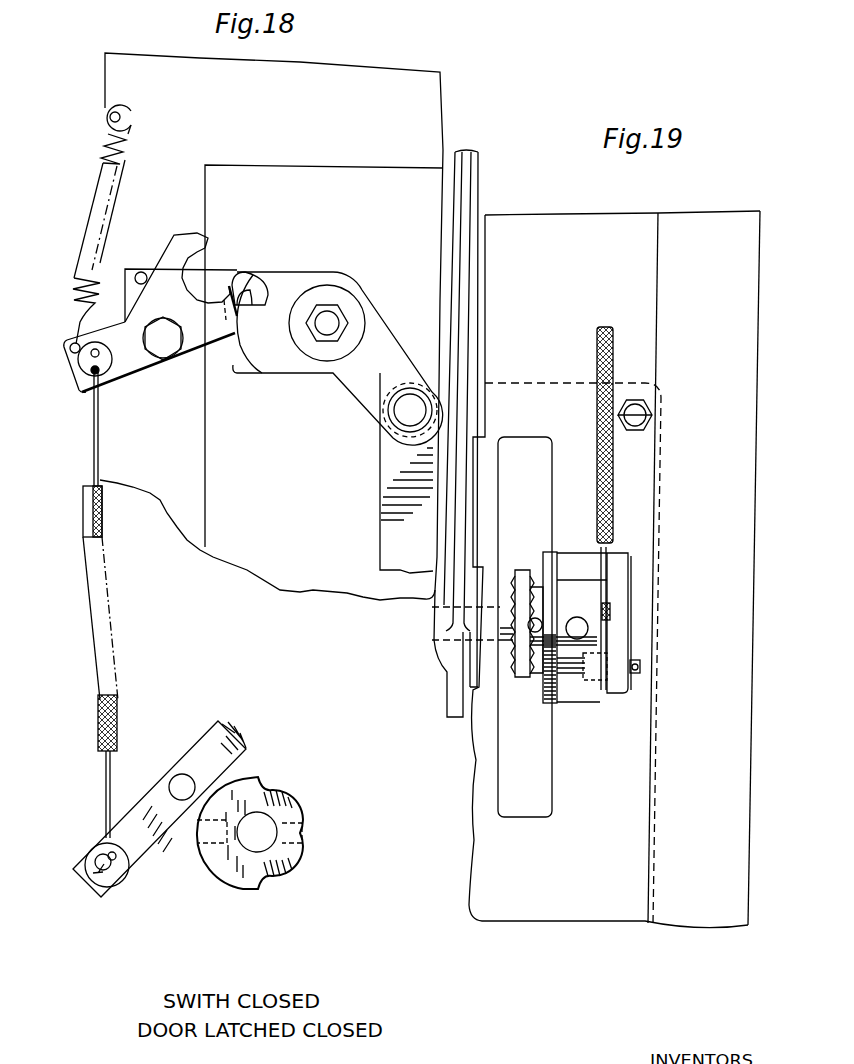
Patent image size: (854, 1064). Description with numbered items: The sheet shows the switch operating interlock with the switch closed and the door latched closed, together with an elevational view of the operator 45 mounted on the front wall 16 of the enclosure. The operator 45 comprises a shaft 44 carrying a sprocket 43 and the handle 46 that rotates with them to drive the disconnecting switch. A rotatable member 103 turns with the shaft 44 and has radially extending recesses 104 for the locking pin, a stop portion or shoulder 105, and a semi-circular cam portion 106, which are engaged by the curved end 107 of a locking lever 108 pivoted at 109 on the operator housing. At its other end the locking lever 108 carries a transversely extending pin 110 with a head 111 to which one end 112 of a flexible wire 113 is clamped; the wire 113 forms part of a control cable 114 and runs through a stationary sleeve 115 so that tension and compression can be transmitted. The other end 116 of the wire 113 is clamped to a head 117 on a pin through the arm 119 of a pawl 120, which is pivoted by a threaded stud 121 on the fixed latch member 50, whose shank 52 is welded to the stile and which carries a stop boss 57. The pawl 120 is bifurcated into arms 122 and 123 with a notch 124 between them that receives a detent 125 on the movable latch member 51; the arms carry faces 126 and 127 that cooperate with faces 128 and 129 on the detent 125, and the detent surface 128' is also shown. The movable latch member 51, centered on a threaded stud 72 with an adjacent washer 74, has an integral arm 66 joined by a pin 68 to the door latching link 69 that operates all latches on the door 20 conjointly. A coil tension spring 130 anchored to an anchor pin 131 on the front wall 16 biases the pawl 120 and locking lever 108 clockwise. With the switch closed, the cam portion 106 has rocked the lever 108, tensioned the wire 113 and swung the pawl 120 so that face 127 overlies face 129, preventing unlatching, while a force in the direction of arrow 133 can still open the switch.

In FIG. 18, the front wall 16 is at (147, 62).
In FIG. 19, the front wall 16 is at (556, 222).
In FIG. 18, the door 20 is at (327, 180).
In FIG. 19, the door 20 is at (707, 228).
In FIG. 19, the sprocket 43 is at (523, 677).
In FIG. 18, the shaft 44 is at (262, 840).
In FIG. 19, the shaft 44 is at (503, 632).
In FIG. 19, the operator 45 is at (538, 352).
In FIG. 19, the handle 46 is at (460, 353).
In FIG. 18, the fixed latch member 50 is at (128, 256).
In FIG. 18, the movable latch member 51 is at (358, 268).
In FIG. 18, the shank 52 is at (134, 309).
In FIG. 18, the stop boss 57 is at (150, 240).
In FIG. 18, the arm 66 is at (390, 343).
In FIG. 18, the pin 68 is at (410, 408).
In FIG. 18, the door latching link 69 is at (402, 515).
In FIG. 18, the threaded stud 72 is at (332, 323).
In FIG. 18, the washer 74 is at (347, 323).
In FIG. 18, the rotatable member 103 is at (277, 752).
In FIG. 19, the rotatable member 103 is at (640, 603).
In FIG. 18, the radially extending recess 104 is at (305, 831).
In FIG. 19, the radially extending recess 104 is at (577, 639).
In FIG. 18, the stop portion or shoulder 105 is at (290, 877).
In FIG. 18, the semi-circular cam portion 106 is at (213, 880).
In FIG. 18, the curved end 107 is at (240, 743).
In FIG. 18, the locking lever 108 is at (207, 744).
In FIG. 19, the locking lever 108 is at (620, 560).
In FIG. 18, the pivot 109 is at (180, 783).
In FIG. 19, the pivot 109 is at (632, 587).
In FIG. 18, the transversely extending pin 110 is at (98, 855).
In FIG. 19, the transversely extending pin 110 is at (642, 667).
In FIG. 19, the head 111 is at (597, 683).
In FIG. 18, the end of wire 112 is at (106, 793).
In FIG. 19, the end of wire 112 is at (607, 643).
In FIG. 18, the flexible wire 113 is at (108, 752).
In FIG. 19, the flexible wire 113 is at (607, 543).
In FIG. 18, the control cable 114 is at (75, 682).
In FIG. 19, the control cable 114 is at (636, 358).
In FIG. 18, the stationary sleeve 115 is at (98, 723).
In FIG. 19, the stationary sleeve 115 is at (613, 443).
In FIG. 18, the other end of wire 116 is at (93, 436).
In FIG. 18, the head 117 is at (105, 368).
In FIG. 18, the arm 119 is at (78, 379).
In FIG. 18, the pawl 120 is at (148, 365).
In FIG. 18, the threaded stud 121 is at (195, 362).
In FIG. 18, the arm 122 is at (192, 243).
In FIG. 18, the arm 123 is at (246, 324).
In FIG. 18, the notch 124 is at (197, 275).
In FIG. 18, the detent 125 is at (253, 278).
In FIG. 18, the face 126 is at (213, 242).
In FIG. 18, the face 127 is at (259, 313).
In FIG. 18, the face 128 is at (252, 268).
In FIG. 18, the strike knob surface 128' is at (298, 260).
In FIG. 18, the face 129 is at (203, 314).
In FIG. 18, the coil tension spring 130 is at (90, 195).
In FIG. 18, the anchor pin 131 is at (136, 117).
In FIG. 18, the arrow 133 is at (340, 805).